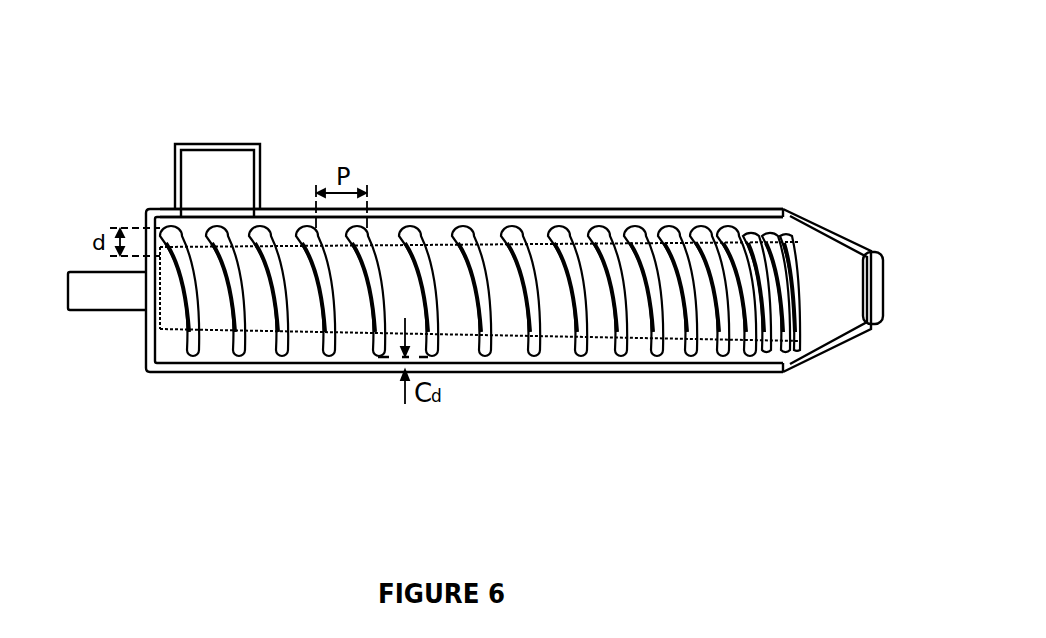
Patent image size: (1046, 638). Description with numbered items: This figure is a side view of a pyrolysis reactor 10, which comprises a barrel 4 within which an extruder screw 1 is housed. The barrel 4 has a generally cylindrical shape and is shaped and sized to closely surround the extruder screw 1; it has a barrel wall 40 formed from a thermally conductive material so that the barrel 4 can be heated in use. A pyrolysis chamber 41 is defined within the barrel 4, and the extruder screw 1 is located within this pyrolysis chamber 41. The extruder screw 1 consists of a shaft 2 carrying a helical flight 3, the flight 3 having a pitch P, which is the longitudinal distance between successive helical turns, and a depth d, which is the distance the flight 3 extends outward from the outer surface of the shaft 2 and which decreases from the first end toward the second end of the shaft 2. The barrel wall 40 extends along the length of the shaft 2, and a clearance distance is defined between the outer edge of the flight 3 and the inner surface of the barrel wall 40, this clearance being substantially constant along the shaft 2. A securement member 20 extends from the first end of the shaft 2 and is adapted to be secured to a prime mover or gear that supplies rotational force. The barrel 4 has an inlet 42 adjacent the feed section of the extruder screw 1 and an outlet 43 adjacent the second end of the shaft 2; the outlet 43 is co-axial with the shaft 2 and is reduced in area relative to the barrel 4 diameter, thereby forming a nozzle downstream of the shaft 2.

The extruder screw 1 is at (254, 463).
The shaft 2 is at (632, 330).
The flight 3 is at (335, 341).
The barrel 4 is at (441, 209).
The pyrolysis reactor 10 is at (775, 65).
The securement member 20 is at (100, 293).
The barrel wall 40 is at (586, 216).
The pyrolysis chamber 41 is at (285, 222).
The inlet 42 is at (197, 147).
The outlet 43 is at (873, 307).